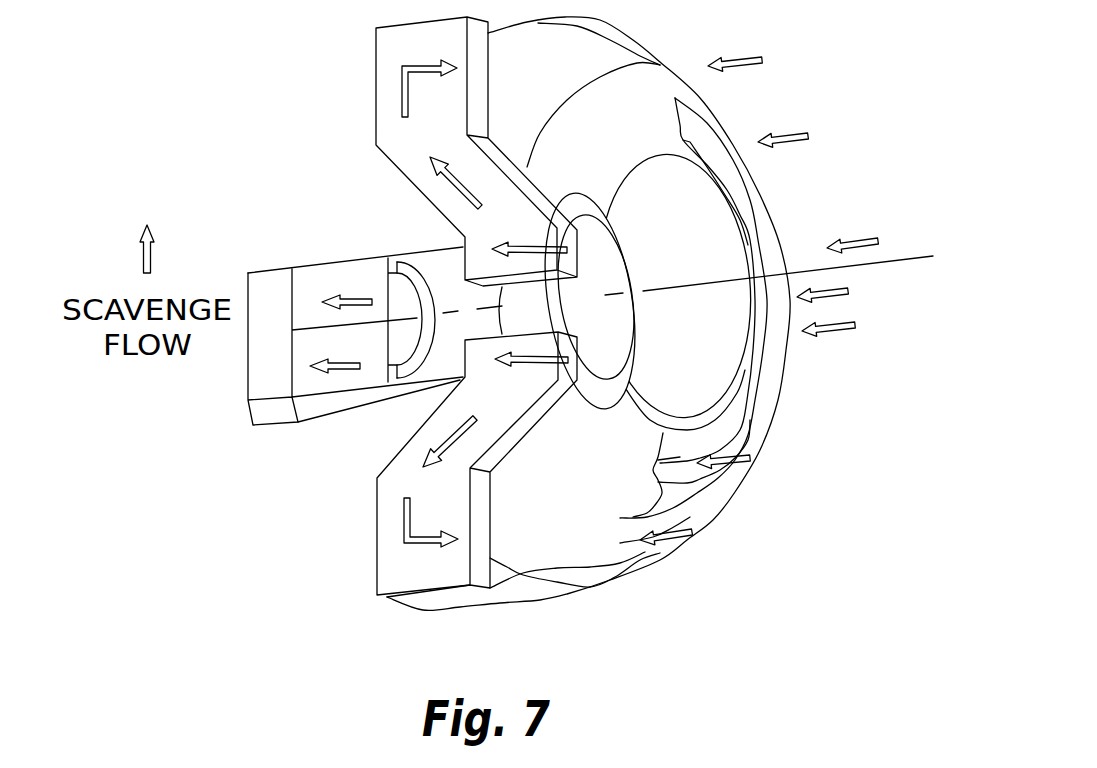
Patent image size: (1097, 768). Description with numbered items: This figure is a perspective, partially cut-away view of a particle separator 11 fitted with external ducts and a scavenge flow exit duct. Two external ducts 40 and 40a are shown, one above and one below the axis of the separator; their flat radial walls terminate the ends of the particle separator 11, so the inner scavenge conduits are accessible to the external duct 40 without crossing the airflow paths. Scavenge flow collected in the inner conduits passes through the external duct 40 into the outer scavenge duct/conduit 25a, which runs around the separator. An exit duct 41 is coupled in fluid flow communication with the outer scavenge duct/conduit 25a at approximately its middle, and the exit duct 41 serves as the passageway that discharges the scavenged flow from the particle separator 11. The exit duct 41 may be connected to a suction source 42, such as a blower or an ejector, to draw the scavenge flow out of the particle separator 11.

The particle separator 11 is at (810, 224).
The external duct 40a is at (413, 49).
The external duct 40 is at (398, 572).
The exit duct 41 is at (320, 268).
The suction source 42 is at (262, 367).
The outer scavenge duct/conduit 25a is at (394, 634).